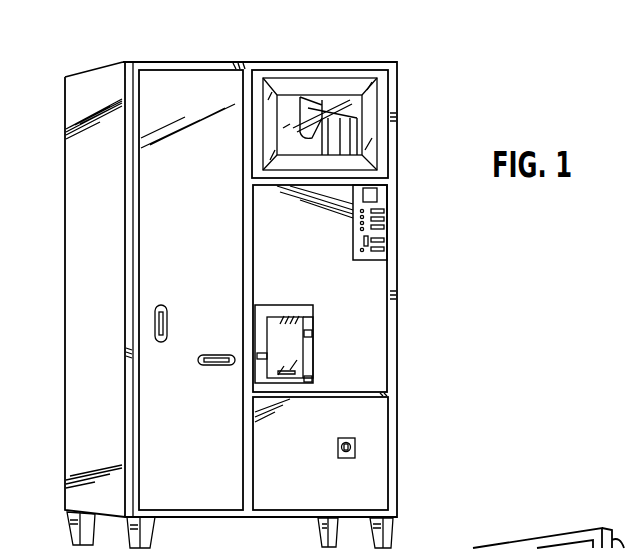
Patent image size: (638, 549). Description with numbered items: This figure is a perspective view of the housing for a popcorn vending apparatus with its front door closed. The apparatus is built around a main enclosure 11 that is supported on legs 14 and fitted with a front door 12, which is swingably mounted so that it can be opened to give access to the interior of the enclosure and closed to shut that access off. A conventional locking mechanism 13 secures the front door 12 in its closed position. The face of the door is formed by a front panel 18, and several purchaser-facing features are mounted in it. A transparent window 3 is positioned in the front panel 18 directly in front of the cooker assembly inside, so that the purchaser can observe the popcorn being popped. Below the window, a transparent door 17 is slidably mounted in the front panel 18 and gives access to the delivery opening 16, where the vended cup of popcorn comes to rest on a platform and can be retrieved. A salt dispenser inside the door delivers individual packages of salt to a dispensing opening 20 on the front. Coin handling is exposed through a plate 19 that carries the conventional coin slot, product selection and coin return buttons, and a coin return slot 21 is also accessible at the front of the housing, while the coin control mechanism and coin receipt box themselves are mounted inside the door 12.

The transparent window 3 is at (290, 106).
The main enclosure 11 is at (80, 285).
The front door 12 is at (207, 190).
The locking mechanism 13 is at (168, 320).
The legs 14 is at (392, 532).
The delivery opening 16 is at (310, 380).
The transparent door 17 is at (288, 337).
The front panel 18 is at (365, 315).
The plate 19 is at (380, 203).
The dispensing opening 20 is at (213, 367).
The coin return slot 21 is at (355, 452).